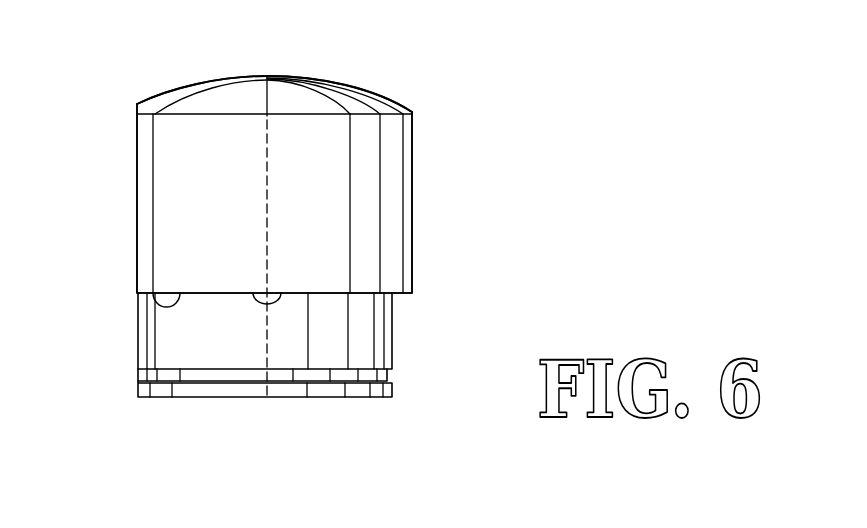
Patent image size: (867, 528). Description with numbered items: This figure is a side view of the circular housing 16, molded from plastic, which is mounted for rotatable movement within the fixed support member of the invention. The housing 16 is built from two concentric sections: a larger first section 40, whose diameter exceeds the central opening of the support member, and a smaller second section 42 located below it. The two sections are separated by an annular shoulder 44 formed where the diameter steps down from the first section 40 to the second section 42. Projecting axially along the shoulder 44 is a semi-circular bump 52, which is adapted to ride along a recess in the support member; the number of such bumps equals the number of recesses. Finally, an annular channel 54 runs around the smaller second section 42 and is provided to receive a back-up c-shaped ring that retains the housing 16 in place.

The circular housing 16 is at (500, 143).
The first section 40 is at (137, 138).
The second section 42 is at (137, 342).
The annular shoulder 44 is at (163, 311).
The semi-circular bump 52 is at (255, 298).
The annular channel 54 is at (392, 379).